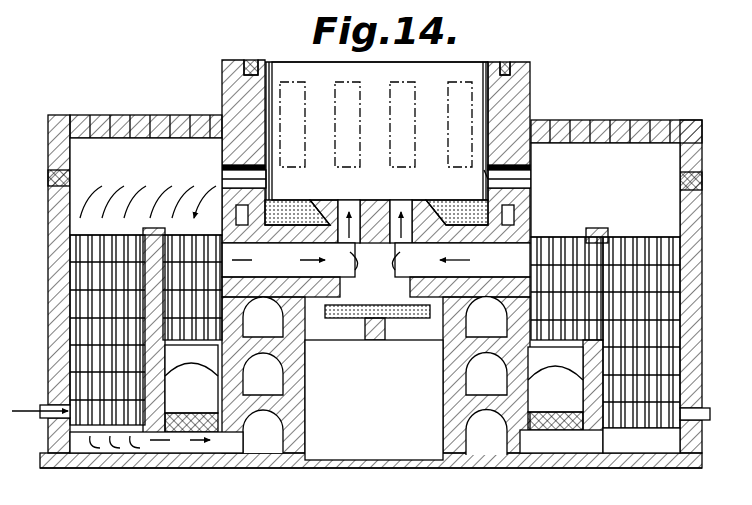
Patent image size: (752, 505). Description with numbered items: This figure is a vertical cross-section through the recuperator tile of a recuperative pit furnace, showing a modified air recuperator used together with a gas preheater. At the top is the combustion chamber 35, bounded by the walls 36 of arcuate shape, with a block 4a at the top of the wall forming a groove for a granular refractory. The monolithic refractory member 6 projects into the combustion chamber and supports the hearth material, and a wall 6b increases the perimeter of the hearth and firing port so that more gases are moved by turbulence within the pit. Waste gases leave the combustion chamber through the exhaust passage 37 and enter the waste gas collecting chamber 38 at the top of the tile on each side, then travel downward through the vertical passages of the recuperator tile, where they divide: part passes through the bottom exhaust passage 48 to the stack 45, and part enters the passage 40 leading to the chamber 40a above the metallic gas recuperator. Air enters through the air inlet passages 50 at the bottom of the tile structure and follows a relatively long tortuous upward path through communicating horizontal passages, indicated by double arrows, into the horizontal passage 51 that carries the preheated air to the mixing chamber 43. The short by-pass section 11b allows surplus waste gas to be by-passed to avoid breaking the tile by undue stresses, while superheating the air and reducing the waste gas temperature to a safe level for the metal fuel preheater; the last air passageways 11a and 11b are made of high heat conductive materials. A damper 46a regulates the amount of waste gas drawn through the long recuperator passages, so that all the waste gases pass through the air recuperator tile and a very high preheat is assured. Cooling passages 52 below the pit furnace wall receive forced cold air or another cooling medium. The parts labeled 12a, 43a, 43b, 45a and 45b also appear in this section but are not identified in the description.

The block 4a is at (530, 44).
The monolithic refractory member 6 is at (345, 202).
The wall 6b is at (396, 202).
The air passageway 11a is at (107, 322).
The by-pass section 11b is at (192, 279).
The pedestal support 12a is at (412, 340).
The combustion chamber 35 is at (376, 131).
The walls 36 is at (222, 95).
The exhaust passage 37 is at (488, 180).
The waste gas collecting chamber 38 is at (375, 187).
The passage 40 is at (191, 388).
The chamber 40a is at (555, 388).
The mixing chamber 43 is at (445, 262).
The tube bank 43a is at (612, 240).
The tube bank cap 43b is at (600, 228).
The stack 45 is at (263, 431).
The arched opening 45a is at (263, 374).
The arched opening 45b is at (263, 317).
The damper 46a is at (260, 468).
The exhaust passage 48 is at (156, 443).
The air inlet passages 50 is at (44, 411).
The horizontal passage 51 is at (290, 260).
The cooling passages 52 is at (516, 216).